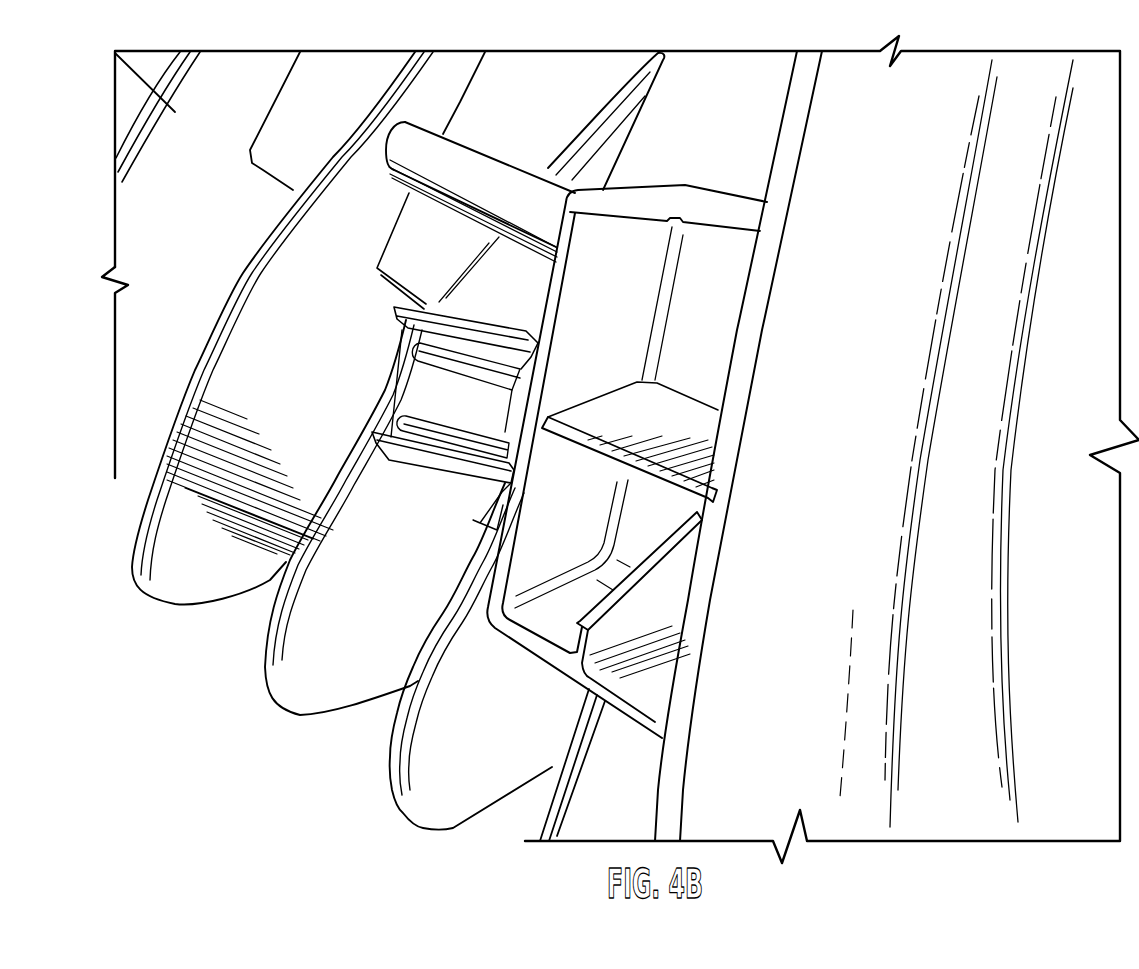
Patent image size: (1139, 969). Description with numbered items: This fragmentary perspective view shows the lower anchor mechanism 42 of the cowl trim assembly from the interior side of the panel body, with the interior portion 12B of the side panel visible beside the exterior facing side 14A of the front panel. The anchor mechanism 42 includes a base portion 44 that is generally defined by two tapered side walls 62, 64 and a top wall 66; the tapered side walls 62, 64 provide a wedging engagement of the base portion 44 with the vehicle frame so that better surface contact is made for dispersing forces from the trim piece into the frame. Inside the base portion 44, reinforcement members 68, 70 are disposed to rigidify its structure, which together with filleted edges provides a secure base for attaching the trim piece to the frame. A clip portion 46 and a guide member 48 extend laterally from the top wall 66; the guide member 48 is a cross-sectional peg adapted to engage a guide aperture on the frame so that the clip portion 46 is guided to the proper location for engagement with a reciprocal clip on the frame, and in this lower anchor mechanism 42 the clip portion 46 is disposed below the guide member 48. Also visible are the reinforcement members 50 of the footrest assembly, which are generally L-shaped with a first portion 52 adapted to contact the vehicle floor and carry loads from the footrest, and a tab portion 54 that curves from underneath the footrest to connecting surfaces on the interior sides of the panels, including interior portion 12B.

The interior portion of the side panel 12B is at (630, 121).
The exterior facing side of the front panel 14A is at (864, 446).
The anchor mechanism 42 is at (542, 442).
The base portion 44 is at (546, 654).
The clip portion 46 is at (417, 390).
The guide member 48 is at (474, 146).
The reinforcement member 50 is at (182, 606).
The first portion 52 is at (375, 383).
The tab portion 54 is at (258, 376).
The tapered side wall 62 is at (585, 603).
The tapered side wall 64 is at (695, 197).
The top wall 66 is at (545, 293).
The reinforcement member 68 is at (643, 562).
The reinforcement member 70 is at (670, 413).